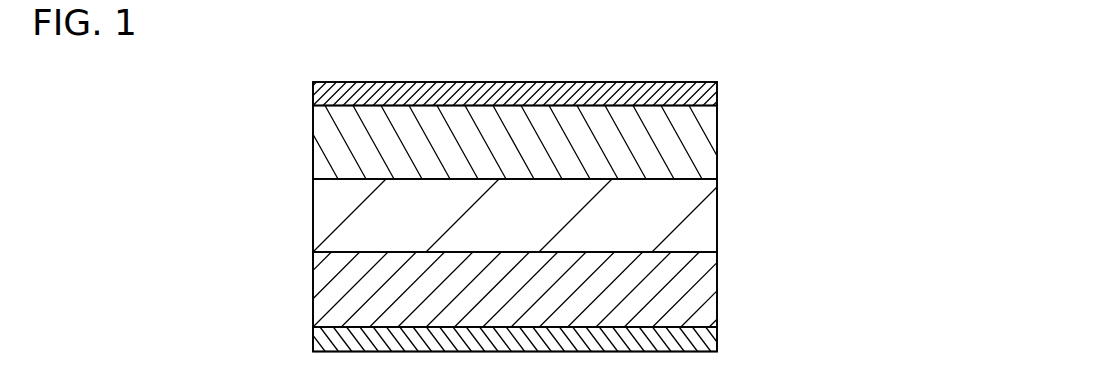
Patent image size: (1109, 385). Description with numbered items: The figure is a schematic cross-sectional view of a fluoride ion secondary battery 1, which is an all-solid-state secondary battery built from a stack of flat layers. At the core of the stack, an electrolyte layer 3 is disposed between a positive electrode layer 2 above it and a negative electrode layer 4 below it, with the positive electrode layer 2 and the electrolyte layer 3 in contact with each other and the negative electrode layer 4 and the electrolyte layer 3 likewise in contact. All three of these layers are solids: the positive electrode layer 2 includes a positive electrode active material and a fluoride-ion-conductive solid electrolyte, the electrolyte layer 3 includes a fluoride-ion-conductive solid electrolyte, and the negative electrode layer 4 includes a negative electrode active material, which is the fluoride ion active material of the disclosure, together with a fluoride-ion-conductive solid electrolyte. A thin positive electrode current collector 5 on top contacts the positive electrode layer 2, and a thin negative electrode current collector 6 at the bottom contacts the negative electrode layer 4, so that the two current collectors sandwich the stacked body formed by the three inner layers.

The fluoride ion secondary battery 1 is at (696, 45).
The positive electrode layer 2 is at (700, 143).
The electrolyte layer 3 is at (700, 218).
The negative electrode layer 4 is at (700, 291).
The positive electrode current collector 5 is at (713, 94).
The negative electrode current collector 6 is at (700, 340).